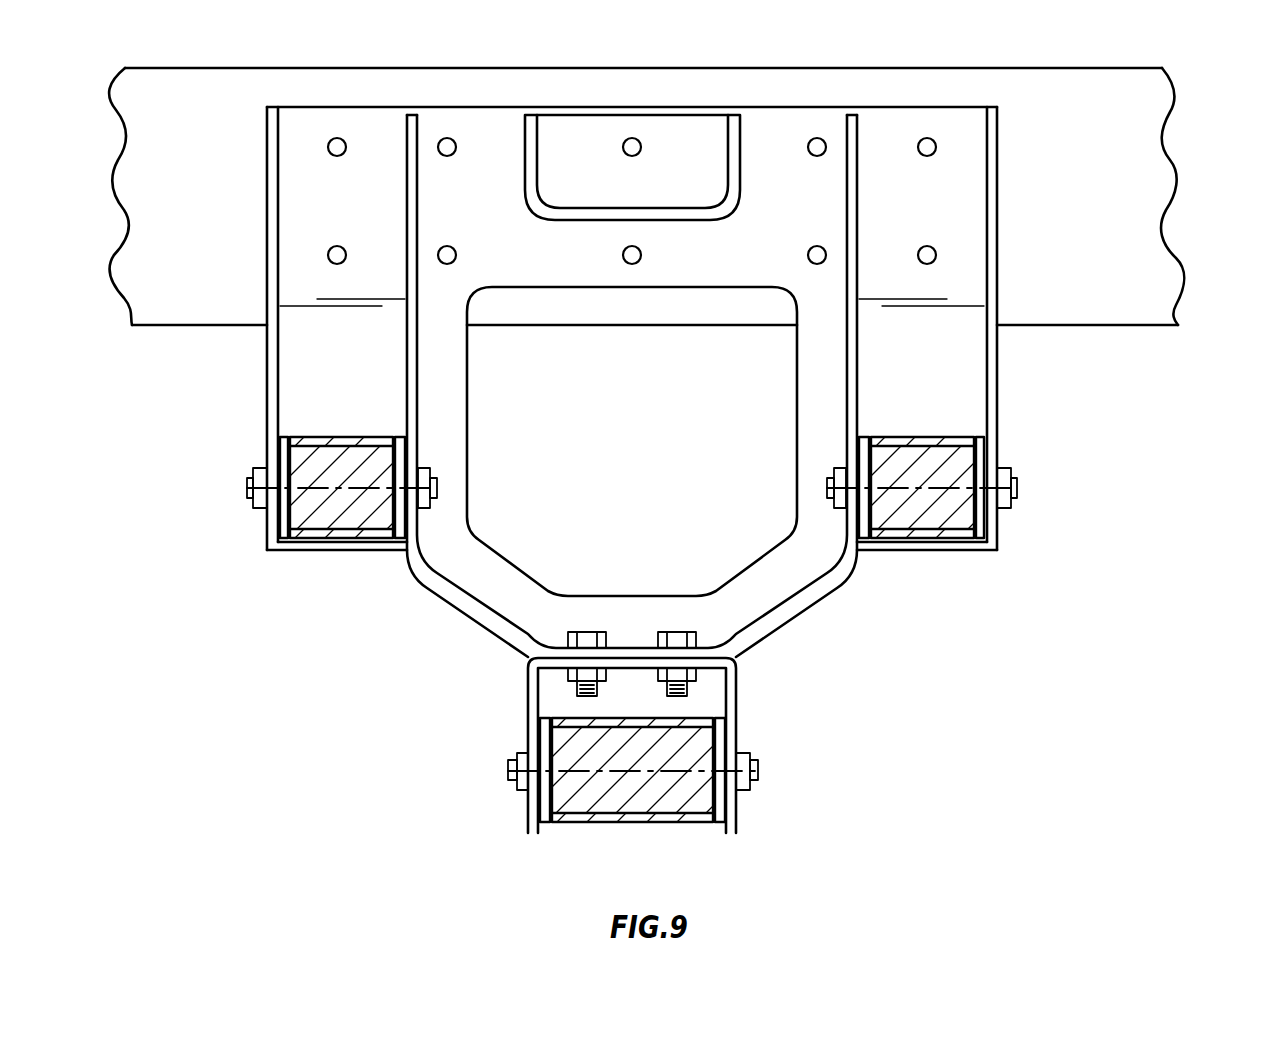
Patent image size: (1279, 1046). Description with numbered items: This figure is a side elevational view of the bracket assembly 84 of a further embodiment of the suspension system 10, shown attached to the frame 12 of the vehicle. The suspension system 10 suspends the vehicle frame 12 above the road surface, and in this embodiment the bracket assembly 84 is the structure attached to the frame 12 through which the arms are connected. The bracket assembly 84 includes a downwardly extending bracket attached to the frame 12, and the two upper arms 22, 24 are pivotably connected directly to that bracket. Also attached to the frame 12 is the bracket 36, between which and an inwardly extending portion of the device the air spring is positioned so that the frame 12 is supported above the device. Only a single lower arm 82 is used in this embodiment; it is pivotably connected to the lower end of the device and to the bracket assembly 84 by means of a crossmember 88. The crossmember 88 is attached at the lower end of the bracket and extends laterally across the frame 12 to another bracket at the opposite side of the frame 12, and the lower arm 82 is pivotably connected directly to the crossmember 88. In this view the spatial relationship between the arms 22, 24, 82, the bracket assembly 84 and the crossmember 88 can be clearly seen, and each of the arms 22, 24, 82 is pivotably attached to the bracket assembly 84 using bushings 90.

The suspension system 10 is at (1160, 523).
The frame 12 is at (170, 327).
The upper arm 22 is at (943, 540).
The upper arm 24 is at (327, 537).
The bracket 36 is at (700, 222).
The lower arm 82 is at (675, 823).
The bracket assembly 84 is at (488, 628).
The crossmember 88 is at (738, 695).
The bushing 90 is at (378, 437).